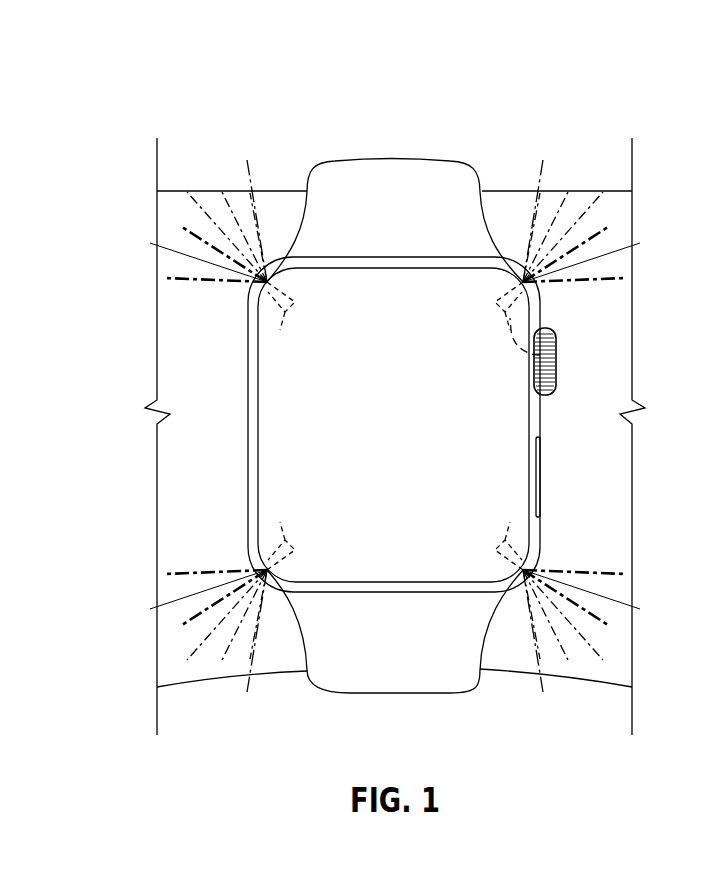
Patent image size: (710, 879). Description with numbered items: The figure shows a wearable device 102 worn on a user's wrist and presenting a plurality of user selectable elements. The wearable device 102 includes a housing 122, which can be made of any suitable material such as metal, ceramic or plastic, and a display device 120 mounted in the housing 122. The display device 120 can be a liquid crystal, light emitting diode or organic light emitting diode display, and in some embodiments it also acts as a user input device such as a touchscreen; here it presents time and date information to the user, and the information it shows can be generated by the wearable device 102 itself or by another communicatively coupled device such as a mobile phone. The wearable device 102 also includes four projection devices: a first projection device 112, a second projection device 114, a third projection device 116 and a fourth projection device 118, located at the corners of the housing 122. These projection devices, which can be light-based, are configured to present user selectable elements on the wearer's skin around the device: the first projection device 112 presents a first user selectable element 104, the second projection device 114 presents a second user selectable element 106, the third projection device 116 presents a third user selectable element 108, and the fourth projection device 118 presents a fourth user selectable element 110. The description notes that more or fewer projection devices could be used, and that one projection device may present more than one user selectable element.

The wearable device 102 is at (368, 128).
The first user selectable element 104 is at (517, 190).
The second user selectable element 106 is at (517, 664).
The third user selectable element 108 is at (273, 664).
The fourth user selectable element 110 is at (273, 190).
The first projection device 112 is at (557, 360).
The second projection device 114 is at (510, 534).
The third projection device 116 is at (280, 534).
The fourth projection device 118 is at (280, 318).
The display device 120 is at (457, 294).
The housing 122 is at (542, 423).